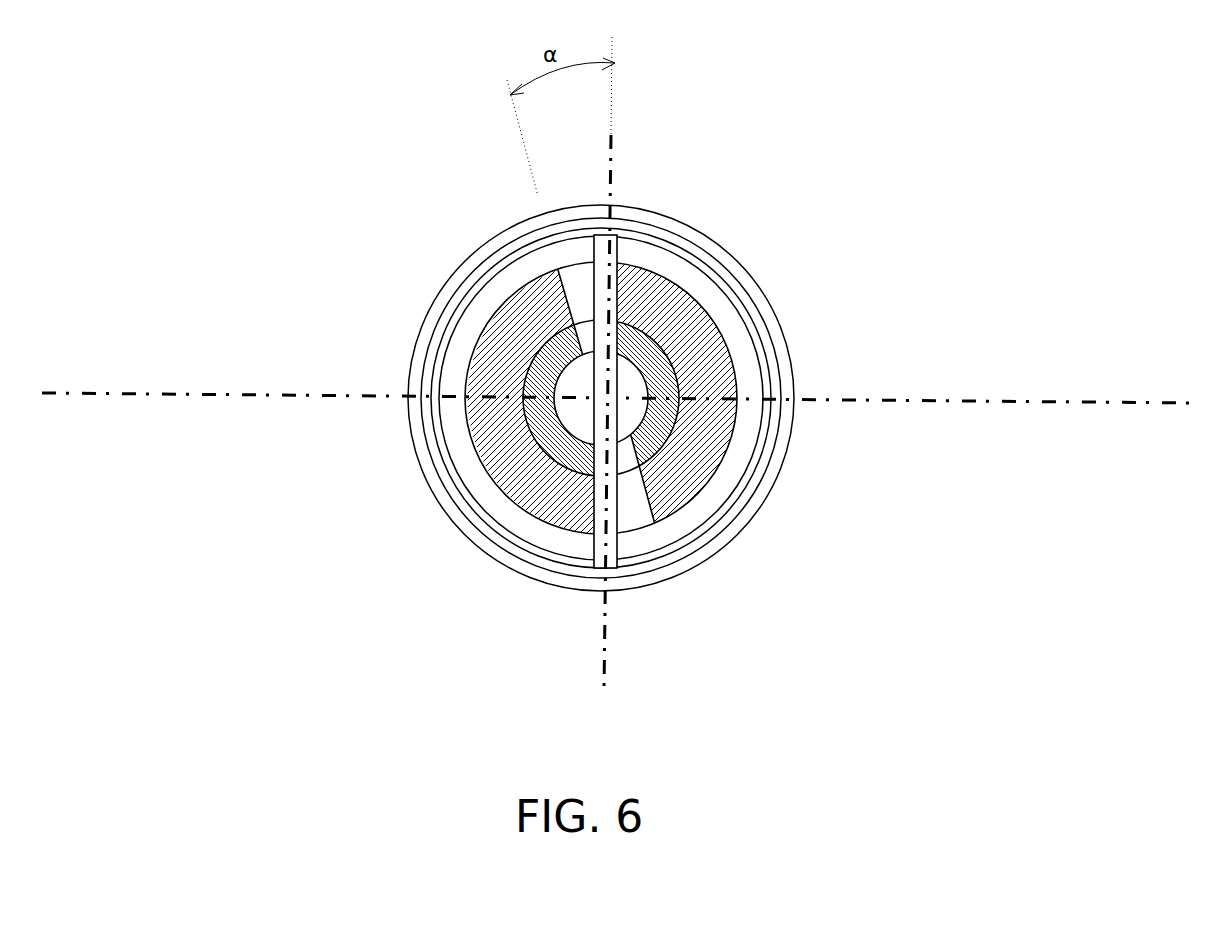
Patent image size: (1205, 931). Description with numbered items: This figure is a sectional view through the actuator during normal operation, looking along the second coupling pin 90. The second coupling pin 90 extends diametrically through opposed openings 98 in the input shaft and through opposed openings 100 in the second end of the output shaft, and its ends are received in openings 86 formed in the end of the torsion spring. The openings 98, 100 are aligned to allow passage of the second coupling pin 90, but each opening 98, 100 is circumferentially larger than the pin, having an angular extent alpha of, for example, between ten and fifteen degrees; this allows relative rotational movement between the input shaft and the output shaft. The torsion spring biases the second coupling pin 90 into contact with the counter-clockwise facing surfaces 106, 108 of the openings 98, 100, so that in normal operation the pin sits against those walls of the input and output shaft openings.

The opening 86 is at (622, 240).
The second coupling pin 90 is at (707, 242).
The opening in input shaft 98 is at (582, 338).
The opening in second end of output shaft 100 is at (570, 292).
The counter-clockwise facing surface 106 is at (640, 324).
The counter-clockwise facing surface 108 is at (673, 277).